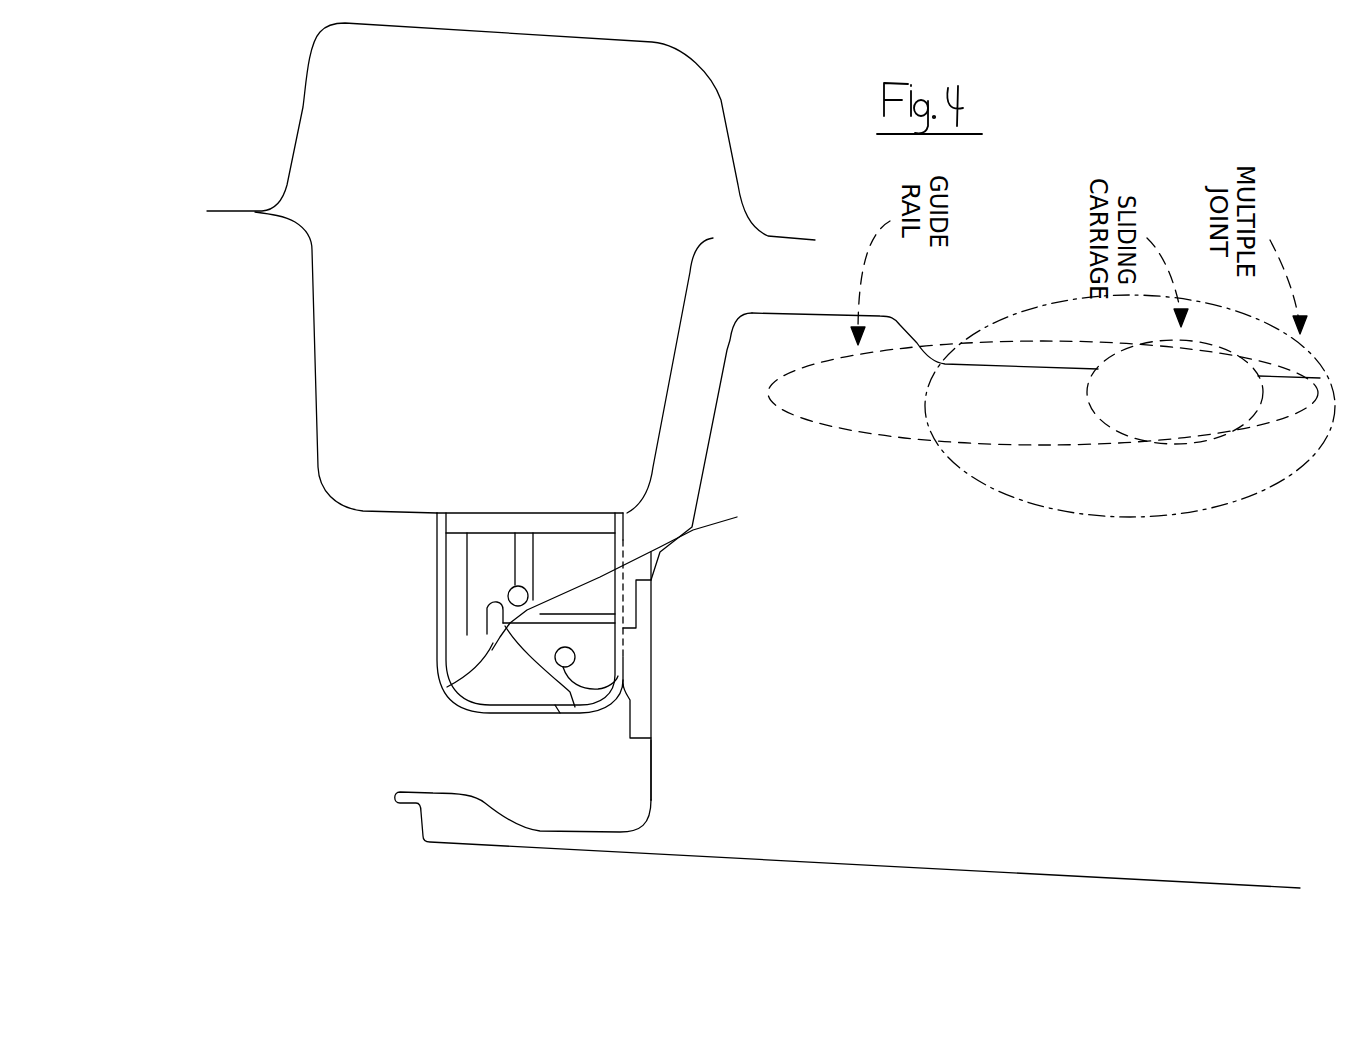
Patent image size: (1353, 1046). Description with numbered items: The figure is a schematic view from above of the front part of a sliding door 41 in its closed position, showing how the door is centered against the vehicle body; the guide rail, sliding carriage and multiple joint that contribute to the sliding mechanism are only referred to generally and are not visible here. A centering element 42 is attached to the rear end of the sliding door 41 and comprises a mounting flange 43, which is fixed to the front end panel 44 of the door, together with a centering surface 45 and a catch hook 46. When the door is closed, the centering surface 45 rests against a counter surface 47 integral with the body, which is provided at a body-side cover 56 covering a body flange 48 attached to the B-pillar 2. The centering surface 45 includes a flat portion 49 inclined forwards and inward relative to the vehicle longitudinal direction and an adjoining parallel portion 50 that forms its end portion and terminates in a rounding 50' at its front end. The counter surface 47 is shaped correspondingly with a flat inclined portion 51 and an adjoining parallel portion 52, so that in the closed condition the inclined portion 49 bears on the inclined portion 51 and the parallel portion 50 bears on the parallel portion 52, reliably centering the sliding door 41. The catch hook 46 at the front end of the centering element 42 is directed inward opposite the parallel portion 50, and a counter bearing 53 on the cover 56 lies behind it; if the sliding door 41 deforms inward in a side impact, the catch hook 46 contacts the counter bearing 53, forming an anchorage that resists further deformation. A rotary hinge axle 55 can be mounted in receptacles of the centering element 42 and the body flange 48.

The B-pillar 2 is at (313, 328).
The sliding door 41 is at (610, 874).
The centering element 42 is at (700, 624).
The mounting flange 43 is at (640, 728).
The front end panel 44 is at (651, 763).
The centering surface 45 is at (636, 597).
The catch hook 46 is at (488, 616).
The counter surface 47 is at (490, 678).
The body flange 48 is at (482, 559).
The inclined portion 49 is at (568, 676).
The parallel portion 50 is at (634, 572).
The rounding 50' is at (397, 638).
The inclined portion 51 is at (540, 641).
The parallel portion 52 is at (493, 645).
The counter bearing 53 is at (516, 586).
The rotary hinge axle 55 is at (565, 657).
The cover 56 is at (530, 693).